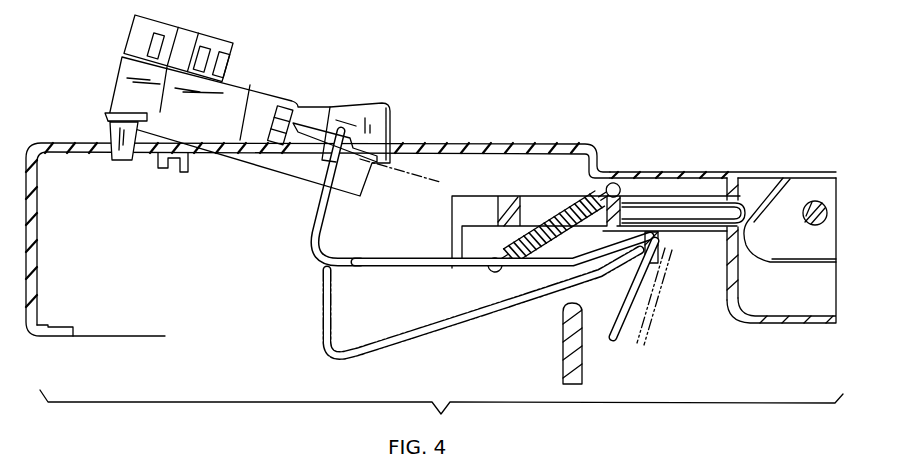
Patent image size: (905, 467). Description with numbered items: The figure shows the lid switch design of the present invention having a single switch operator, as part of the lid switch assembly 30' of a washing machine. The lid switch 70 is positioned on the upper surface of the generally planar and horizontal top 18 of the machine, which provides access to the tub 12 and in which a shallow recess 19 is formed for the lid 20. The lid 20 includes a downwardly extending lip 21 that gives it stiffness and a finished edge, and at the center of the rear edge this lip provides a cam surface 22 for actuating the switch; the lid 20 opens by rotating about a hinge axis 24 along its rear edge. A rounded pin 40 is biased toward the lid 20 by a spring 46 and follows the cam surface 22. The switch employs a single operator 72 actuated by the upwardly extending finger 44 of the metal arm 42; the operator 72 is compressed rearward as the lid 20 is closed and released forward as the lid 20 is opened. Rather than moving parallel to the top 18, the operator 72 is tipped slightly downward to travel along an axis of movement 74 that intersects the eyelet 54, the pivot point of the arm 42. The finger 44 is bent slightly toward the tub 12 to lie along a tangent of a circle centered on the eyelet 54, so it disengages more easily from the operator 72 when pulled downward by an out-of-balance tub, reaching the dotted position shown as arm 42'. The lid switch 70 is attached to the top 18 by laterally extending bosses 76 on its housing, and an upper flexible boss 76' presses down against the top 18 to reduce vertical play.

The tub 12 is at (580, 372).
The top 18 is at (453, 147).
The shallow recess 19 is at (745, 283).
The lid 20 is at (790, 191).
The downwardly extending lip 21 is at (742, 177).
The cam surface 22 is at (723, 207).
The hinge axis 24 is at (806, 218).
The lid switch assembly 30' is at (242, 370).
The rounded pin 40 is at (683, 204).
The metal arm 42 is at (458, 196).
The arm in downward position 42' is at (483, 319).
The finger 44 is at (318, 202).
The spring 46 is at (550, 203).
The eyelet 54 is at (641, 262).
The lid switch 70 is at (283, 120).
The operator 72 is at (332, 130).
The axis of movement 74 is at (408, 170).
The bosses 76 is at (222, 189).
The upper flexible boss 76' is at (310, 107).